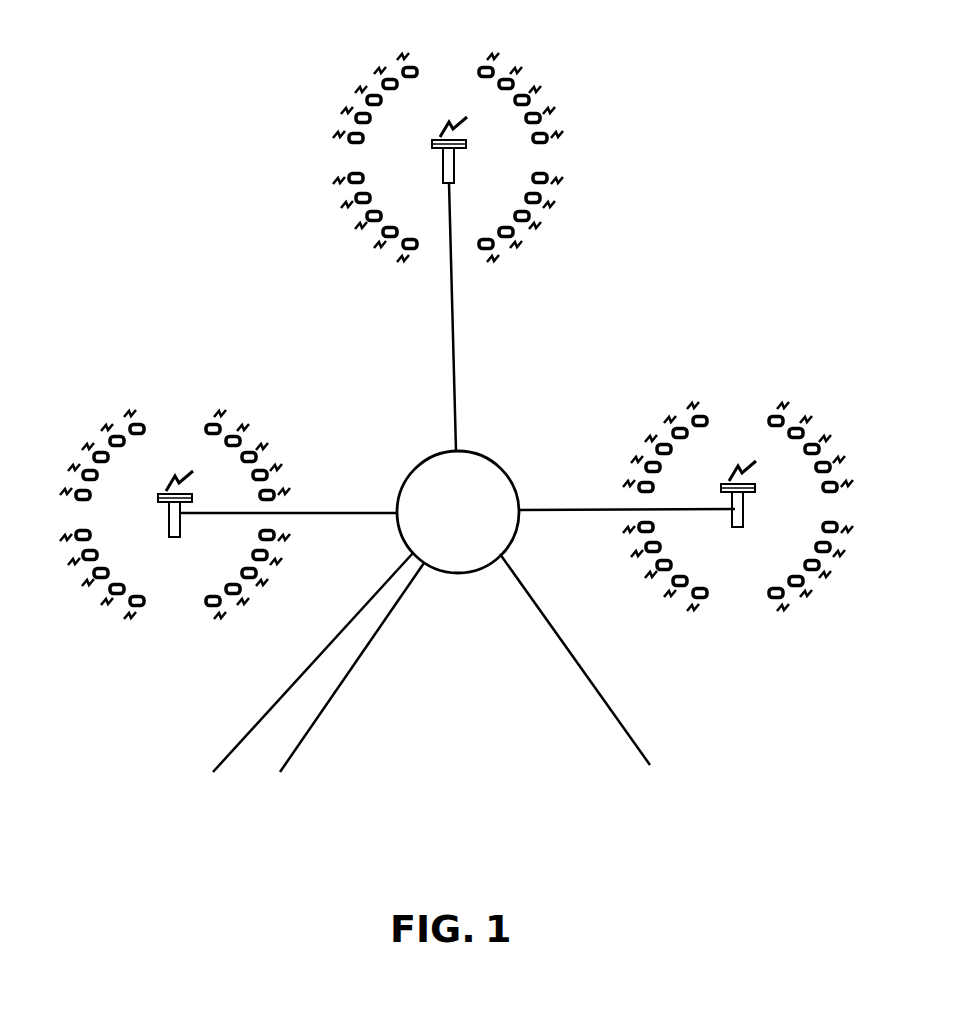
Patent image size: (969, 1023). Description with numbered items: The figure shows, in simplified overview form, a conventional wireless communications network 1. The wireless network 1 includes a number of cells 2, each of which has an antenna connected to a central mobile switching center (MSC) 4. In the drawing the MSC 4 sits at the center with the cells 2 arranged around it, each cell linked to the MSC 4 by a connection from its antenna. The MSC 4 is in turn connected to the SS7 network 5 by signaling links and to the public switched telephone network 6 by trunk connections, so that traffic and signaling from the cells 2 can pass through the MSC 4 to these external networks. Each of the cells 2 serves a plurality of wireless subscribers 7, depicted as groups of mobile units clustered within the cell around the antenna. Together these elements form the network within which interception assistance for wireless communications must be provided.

The wireless network 1 is at (720, 153).
The cells 2 is at (536, 60).
The mobile switching center (MSC) 4 is at (484, 453).
The SS7 network 5 is at (335, 807).
The public switched telephone network 6 is at (568, 833).
The wireless subscribers 7 is at (542, 204).